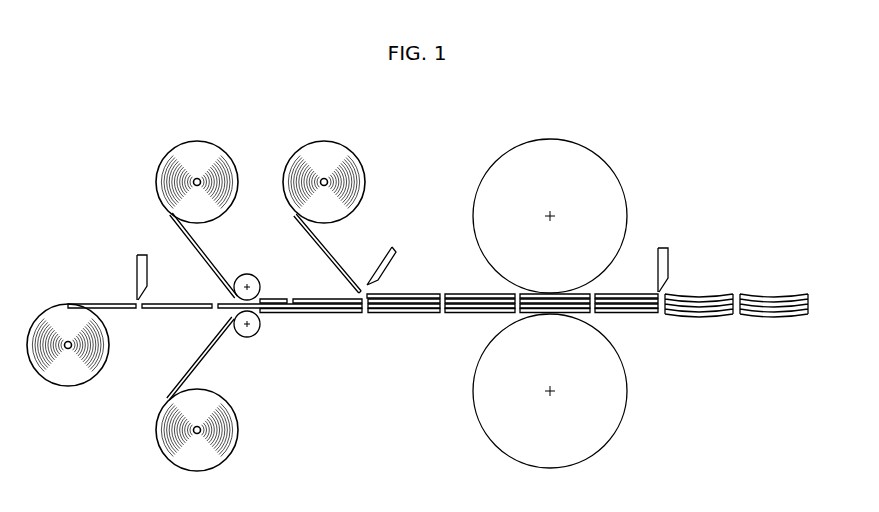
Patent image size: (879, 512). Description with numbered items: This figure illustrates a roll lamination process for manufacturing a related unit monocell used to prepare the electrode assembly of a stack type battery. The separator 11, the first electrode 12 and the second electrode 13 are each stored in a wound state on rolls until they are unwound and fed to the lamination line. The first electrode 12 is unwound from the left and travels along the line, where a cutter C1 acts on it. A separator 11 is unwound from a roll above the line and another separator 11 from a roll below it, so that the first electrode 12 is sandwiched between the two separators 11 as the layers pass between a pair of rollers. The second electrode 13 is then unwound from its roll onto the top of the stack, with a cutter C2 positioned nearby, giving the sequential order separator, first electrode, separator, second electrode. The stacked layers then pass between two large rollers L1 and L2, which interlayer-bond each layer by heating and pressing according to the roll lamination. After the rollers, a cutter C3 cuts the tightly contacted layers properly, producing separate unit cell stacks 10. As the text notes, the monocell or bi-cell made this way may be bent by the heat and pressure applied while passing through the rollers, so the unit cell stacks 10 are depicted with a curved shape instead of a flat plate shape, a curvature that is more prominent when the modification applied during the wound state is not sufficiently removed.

The unit cell stack 10 is at (700, 319).
The separator 11 is at (197, 141).
The first electrode 12 is at (68, 386).
The second electrode 13 is at (324, 141).
The cutter C1 is at (137, 270).
The cutter C2 is at (390, 246).
The cutter C3 is at (663, 247).
The upper laminating roller L1 is at (551, 139).
The lower laminating roller L2 is at (551, 468).